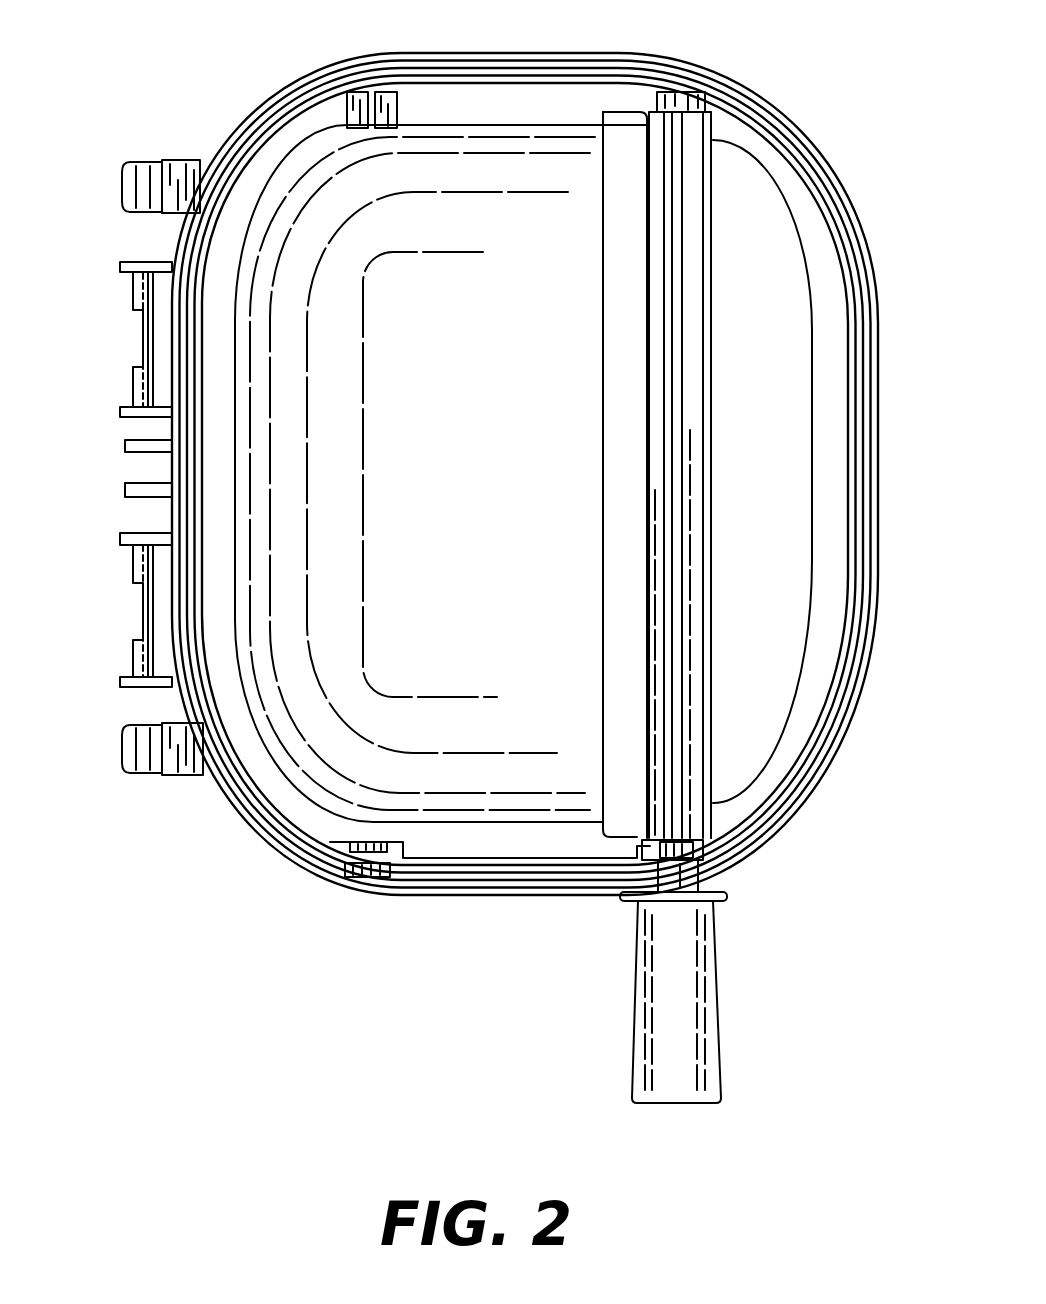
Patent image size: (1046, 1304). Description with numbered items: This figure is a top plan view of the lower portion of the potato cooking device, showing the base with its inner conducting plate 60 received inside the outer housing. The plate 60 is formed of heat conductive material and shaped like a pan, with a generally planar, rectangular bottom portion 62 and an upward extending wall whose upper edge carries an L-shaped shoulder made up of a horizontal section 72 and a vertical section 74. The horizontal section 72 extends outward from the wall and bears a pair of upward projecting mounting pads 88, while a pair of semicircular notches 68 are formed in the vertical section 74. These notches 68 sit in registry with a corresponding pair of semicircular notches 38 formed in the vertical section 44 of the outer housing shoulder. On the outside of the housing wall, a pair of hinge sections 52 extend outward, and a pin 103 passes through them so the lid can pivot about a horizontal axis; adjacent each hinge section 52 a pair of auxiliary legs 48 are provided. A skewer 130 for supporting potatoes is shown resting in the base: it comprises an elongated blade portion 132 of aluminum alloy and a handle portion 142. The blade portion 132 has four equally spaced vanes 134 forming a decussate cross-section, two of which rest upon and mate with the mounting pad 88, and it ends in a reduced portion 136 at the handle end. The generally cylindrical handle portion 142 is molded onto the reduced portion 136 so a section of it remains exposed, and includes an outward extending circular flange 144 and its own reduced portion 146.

The semicircular notches 38 is at (360, 878).
The vertical section 44 is at (880, 500).
The auxiliary legs 48 is at (138, 165).
The hinge sections 52 is at (135, 268).
The inner conducting plate 60 is at (530, 490).
The bottom portion 62 is at (456, 358).
The semicircular notches 68 is at (375, 842).
The horizontal section 72 is at (572, 105).
The vertical section 74 is at (485, 97).
The mounting pads 88 is at (345, 97).
The pin 103 is at (135, 300).
The skewer 130 is at (714, 503).
The blade portion 132 is at (656, 370).
The vanes 134 is at (658, 367).
The reduced portion 136 is at (718, 830).
The handle portion 142 is at (606, 896).
The circular flange 144 is at (727, 902).
The reduced portion 146 is at (727, 875).